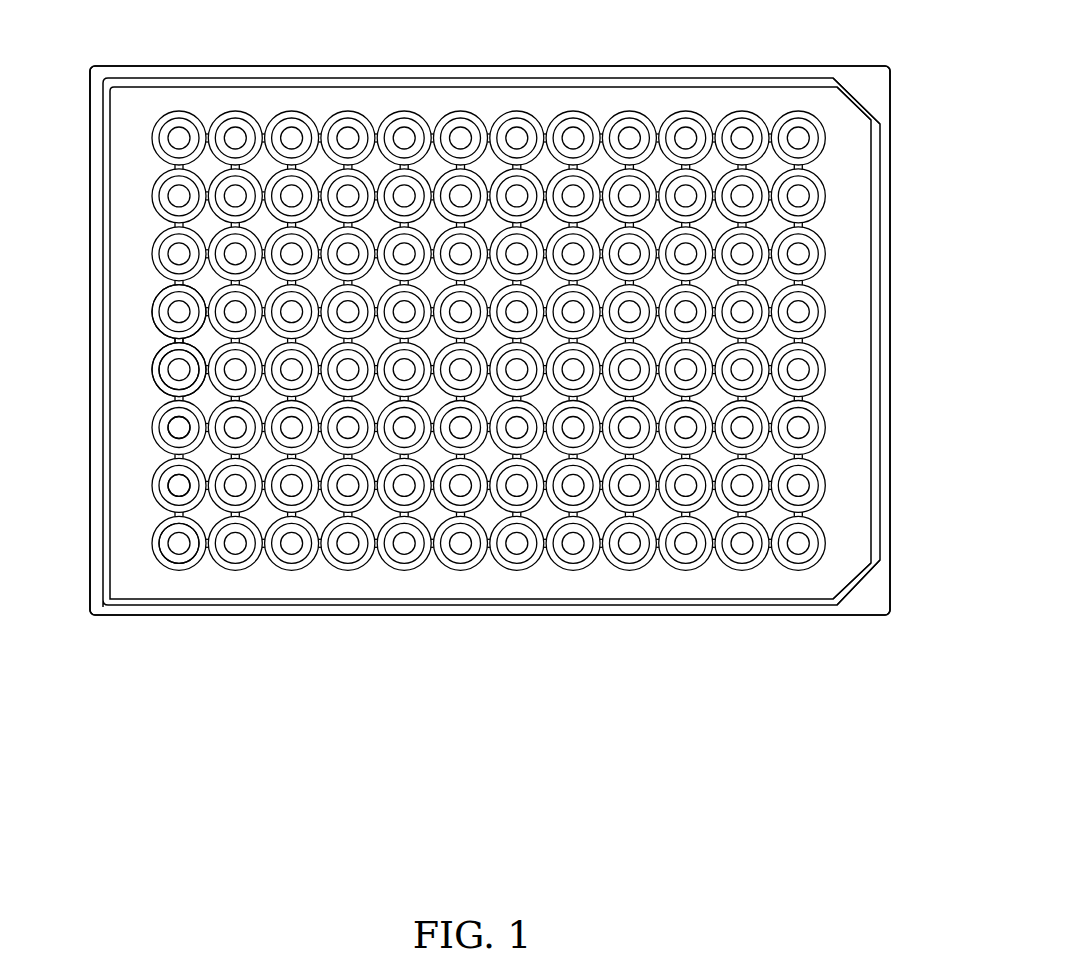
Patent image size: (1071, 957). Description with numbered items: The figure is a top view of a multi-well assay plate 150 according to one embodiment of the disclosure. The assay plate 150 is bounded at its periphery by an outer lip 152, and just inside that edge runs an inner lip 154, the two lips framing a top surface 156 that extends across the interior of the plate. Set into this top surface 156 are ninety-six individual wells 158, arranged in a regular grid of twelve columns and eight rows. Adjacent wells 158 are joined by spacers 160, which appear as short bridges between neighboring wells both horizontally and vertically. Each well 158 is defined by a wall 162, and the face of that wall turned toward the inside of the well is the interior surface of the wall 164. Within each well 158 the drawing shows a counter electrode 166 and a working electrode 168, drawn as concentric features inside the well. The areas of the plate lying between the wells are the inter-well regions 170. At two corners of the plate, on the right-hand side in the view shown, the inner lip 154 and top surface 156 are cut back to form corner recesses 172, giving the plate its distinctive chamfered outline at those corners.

The multi-well assay plate 150 is at (687, 44).
The outer lip 152 is at (90, 148).
The inner lip 154 is at (103, 207).
The top surface 156 is at (120, 253).
The individual wells 158 is at (146, 311).
The spacers 160 is at (178, 342).
The wall 162 is at (156, 375).
The interior surface of the wall 164 is at (165, 387).
The counter electrode 166 is at (168, 432).
The working electrode 168 is at (177, 487).
The inter-well regions 170 is at (202, 517).
The corner recesses 172 is at (873, 95).